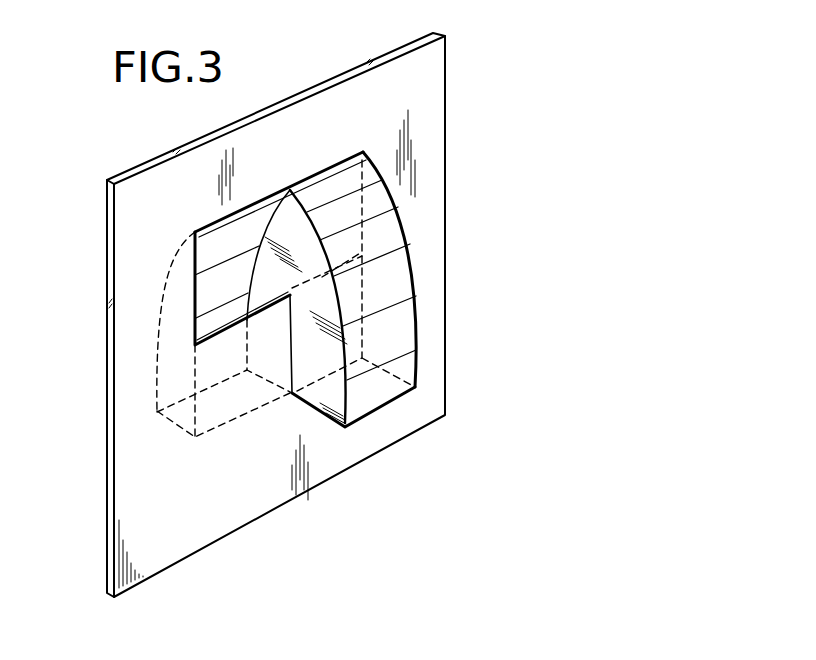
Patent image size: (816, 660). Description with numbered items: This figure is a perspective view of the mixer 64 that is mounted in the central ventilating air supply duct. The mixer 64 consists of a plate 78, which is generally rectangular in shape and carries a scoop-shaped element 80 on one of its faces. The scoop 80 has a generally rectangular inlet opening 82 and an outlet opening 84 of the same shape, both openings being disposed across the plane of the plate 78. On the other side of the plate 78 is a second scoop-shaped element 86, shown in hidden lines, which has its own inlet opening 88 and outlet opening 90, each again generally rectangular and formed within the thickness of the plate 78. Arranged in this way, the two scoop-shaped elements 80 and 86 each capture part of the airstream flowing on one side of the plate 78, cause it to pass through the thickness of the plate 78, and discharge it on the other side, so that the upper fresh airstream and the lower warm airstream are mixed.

The mixer 64 is at (449, 408).
The plate 78 is at (183, 533).
The scoop-shaped element 80 is at (379, 337).
The inlet opening 82 is at (385, 407).
The outlet opening 84 is at (331, 238).
The second scoop-shaped element 86 is at (184, 357).
The inlet opening 88 is at (213, 410).
The outlet opening 90 is at (222, 270).